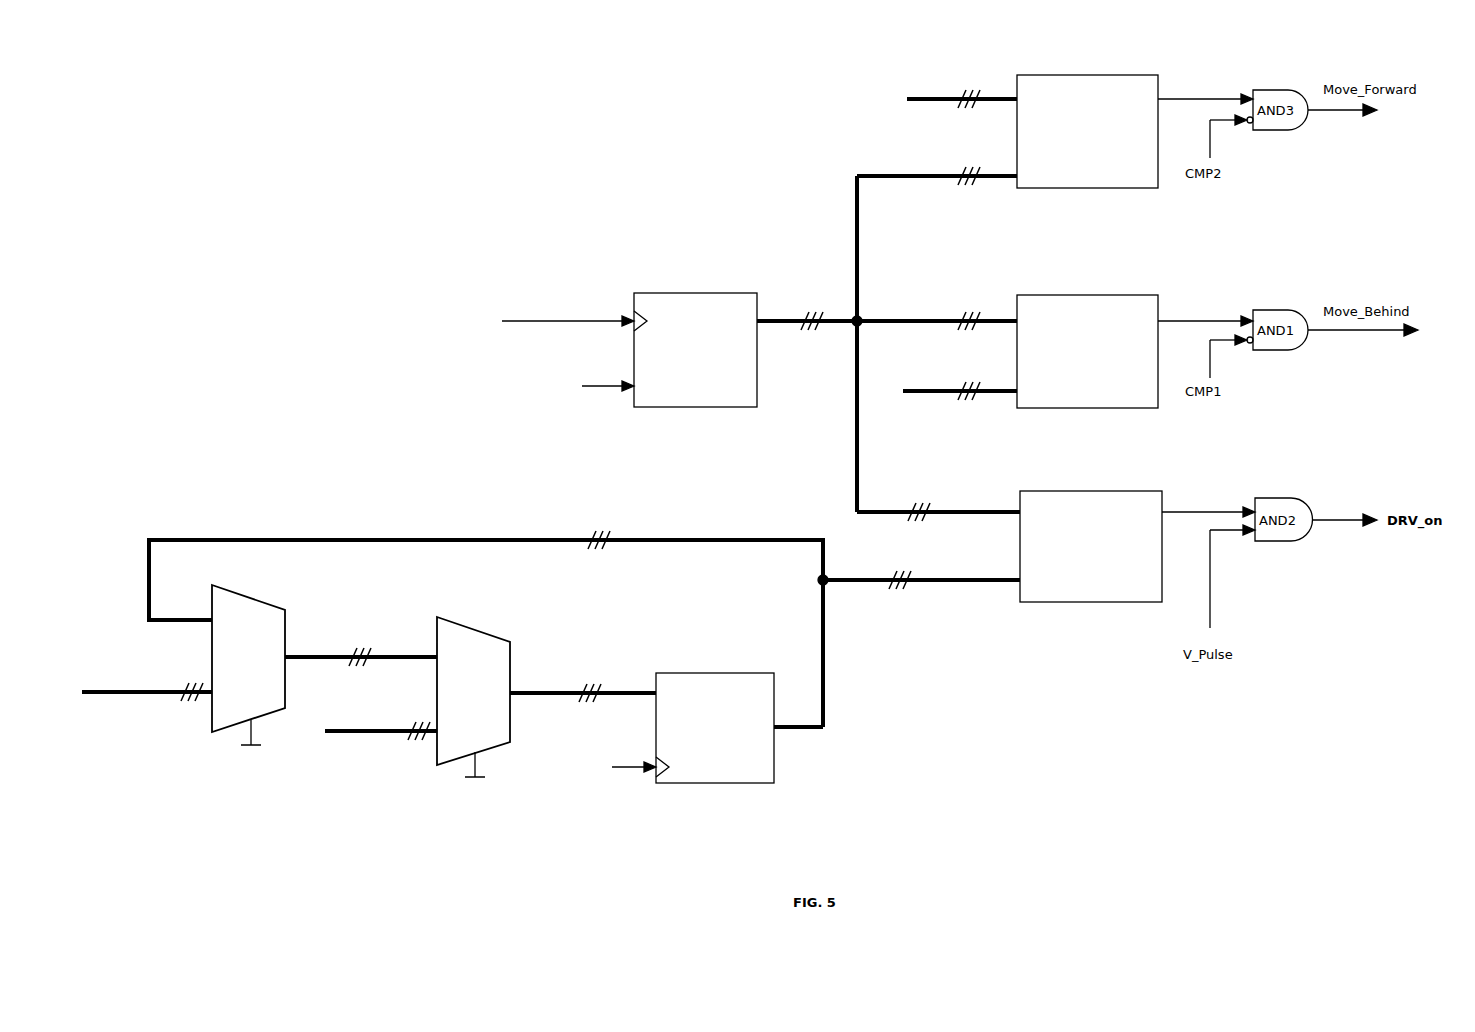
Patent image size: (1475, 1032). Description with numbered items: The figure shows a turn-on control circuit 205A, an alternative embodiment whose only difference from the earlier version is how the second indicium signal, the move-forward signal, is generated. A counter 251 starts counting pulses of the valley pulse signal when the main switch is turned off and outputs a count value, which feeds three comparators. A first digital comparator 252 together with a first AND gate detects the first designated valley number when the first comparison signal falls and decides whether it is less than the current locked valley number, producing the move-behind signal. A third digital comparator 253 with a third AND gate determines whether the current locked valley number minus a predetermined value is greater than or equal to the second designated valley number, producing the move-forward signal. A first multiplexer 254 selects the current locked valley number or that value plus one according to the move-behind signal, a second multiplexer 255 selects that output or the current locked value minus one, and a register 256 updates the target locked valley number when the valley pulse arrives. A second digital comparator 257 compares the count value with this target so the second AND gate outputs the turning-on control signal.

The turn-on control circuit 205A is at (417, 100).
The counter 251 is at (697, 410).
The first digital comparator 252 is at (1028, 410).
The third digital comparator 253 is at (1028, 190).
The first multiplexer 254 is at (250, 597).
The second multiplexer 255 is at (477, 628).
The register 256 is at (718, 671).
The second digital comparator 257 is at (1094, 604).